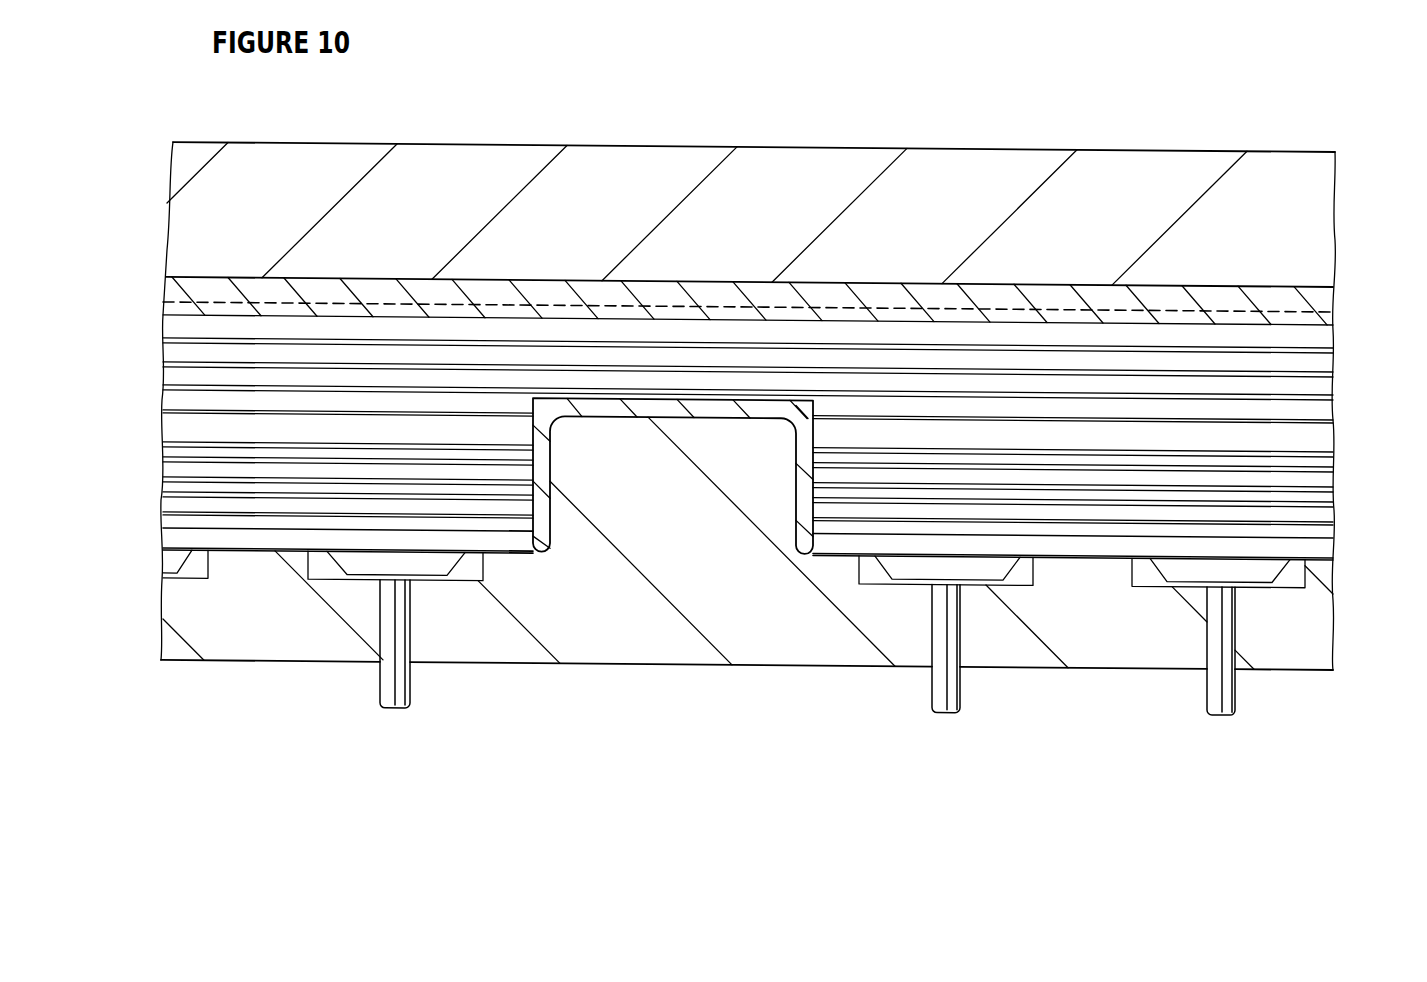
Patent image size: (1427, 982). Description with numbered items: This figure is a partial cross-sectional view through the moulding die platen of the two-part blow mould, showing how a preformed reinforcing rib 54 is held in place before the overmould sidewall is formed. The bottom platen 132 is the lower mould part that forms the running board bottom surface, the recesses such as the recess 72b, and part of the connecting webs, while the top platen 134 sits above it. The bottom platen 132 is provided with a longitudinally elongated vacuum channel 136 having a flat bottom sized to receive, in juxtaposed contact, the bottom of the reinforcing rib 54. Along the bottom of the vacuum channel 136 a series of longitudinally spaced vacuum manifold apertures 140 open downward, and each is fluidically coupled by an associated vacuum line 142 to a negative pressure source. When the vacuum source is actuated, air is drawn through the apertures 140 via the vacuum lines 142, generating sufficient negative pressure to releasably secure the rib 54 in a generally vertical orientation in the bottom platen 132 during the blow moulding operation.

The reinforcing rib 54 is at (1330, 400).
The recess 72b is at (545, 463).
The bottom platen 132 is at (747, 615).
The top platen 134 is at (775, 215).
The vacuum channel 136 is at (245, 547).
The vacuum manifold apertures 140 is at (475, 562).
The vacuum lines 142 is at (395, 710).